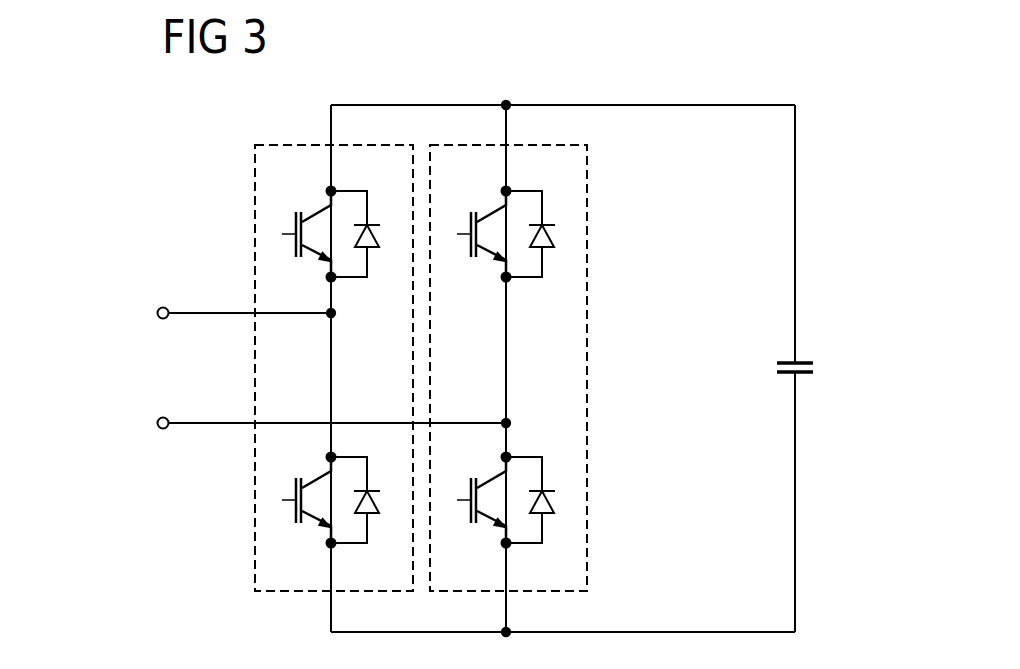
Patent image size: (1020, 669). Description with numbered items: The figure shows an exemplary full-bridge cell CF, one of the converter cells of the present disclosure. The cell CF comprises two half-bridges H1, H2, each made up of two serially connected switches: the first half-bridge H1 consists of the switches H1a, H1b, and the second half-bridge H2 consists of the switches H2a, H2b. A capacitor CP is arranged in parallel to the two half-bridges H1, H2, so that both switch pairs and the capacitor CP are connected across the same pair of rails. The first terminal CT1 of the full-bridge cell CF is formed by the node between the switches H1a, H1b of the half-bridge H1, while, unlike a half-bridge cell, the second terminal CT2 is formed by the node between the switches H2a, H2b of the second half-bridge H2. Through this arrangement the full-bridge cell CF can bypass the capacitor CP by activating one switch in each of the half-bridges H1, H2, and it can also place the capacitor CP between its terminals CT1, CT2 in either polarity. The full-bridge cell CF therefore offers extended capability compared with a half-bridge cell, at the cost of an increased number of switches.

The full-bridge cell CF is at (822, 112).
The capacitor CP is at (802, 362).
The first terminal CT1 is at (157, 311).
The second terminal CT2 is at (157, 421).
The half-bridge H1 is at (255, 167).
The switch H1a is at (282, 234).
The switch H1b is at (282, 500).
The second half-bridge H2 is at (587, 170).
The switch H2a is at (468, 246).
The switch H2b is at (468, 512).